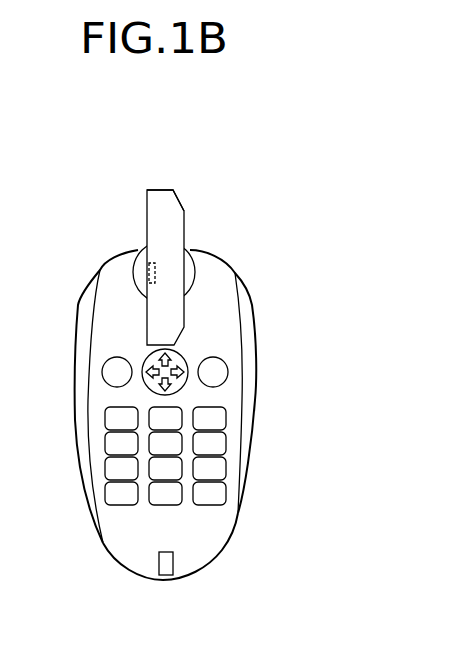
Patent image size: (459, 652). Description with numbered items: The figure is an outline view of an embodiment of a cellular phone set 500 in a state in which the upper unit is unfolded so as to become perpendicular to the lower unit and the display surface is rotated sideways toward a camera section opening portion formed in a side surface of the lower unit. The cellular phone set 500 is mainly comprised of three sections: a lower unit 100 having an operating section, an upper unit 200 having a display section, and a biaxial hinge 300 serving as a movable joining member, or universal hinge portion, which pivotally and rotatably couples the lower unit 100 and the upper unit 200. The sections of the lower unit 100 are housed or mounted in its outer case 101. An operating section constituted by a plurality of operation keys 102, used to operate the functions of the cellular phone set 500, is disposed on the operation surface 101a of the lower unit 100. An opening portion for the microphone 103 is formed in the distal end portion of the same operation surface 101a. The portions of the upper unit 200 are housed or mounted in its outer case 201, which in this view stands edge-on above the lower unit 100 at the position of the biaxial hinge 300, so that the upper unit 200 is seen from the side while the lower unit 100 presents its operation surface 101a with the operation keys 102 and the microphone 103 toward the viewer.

The cellular phone set 500 is at (312, 207).
The lower unit 100 is at (242, 518).
The outer case 101 is at (78, 300).
The operation surface 101a is at (124, 542).
The operation keys 102 is at (64, 353).
The microphone 103 is at (167, 566).
The upper unit 200 is at (146, 213).
The outer case 201 is at (163, 190).
The biaxial hinge 300 is at (129, 269).